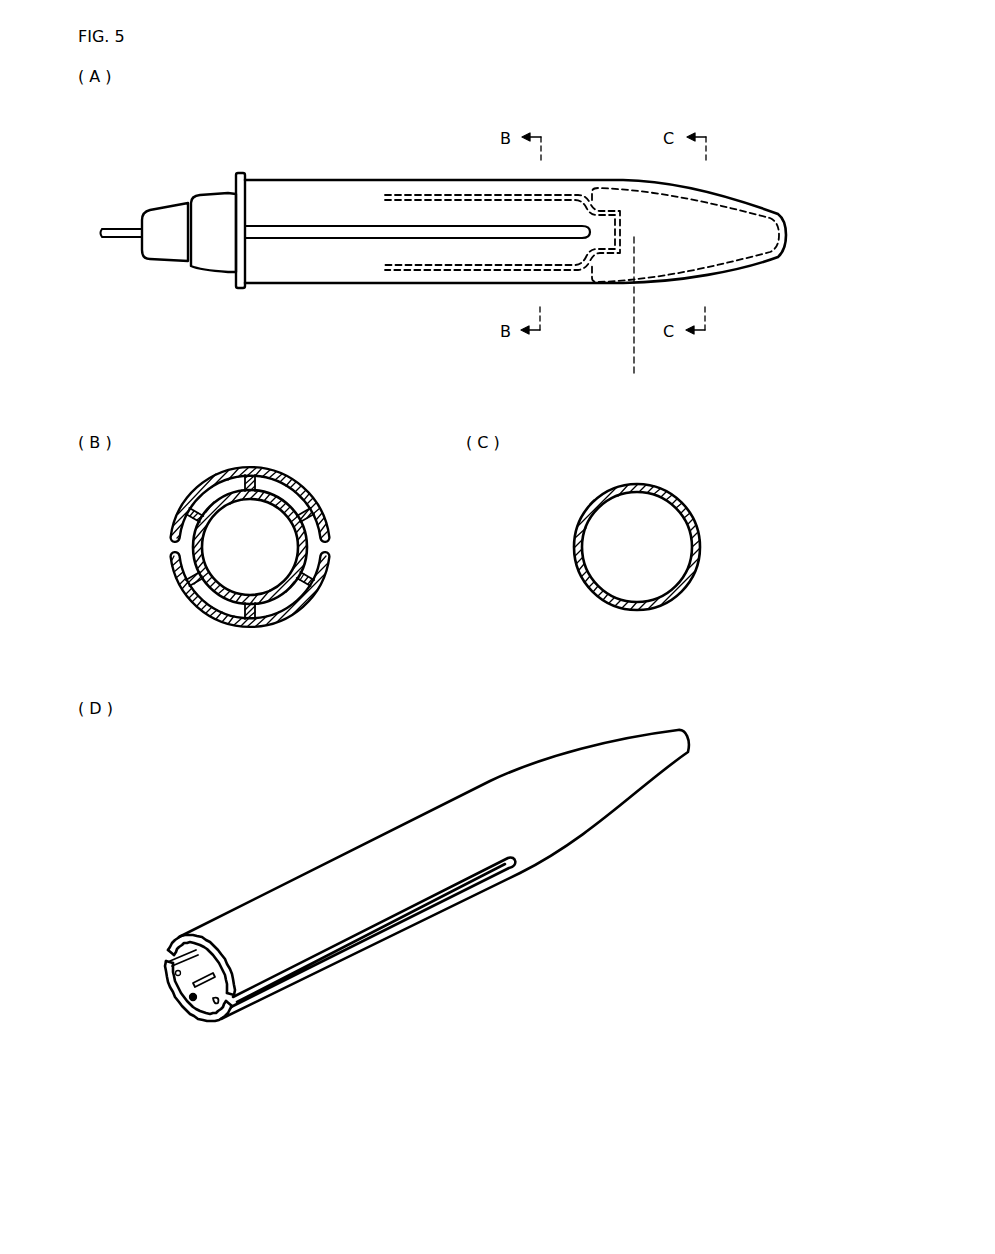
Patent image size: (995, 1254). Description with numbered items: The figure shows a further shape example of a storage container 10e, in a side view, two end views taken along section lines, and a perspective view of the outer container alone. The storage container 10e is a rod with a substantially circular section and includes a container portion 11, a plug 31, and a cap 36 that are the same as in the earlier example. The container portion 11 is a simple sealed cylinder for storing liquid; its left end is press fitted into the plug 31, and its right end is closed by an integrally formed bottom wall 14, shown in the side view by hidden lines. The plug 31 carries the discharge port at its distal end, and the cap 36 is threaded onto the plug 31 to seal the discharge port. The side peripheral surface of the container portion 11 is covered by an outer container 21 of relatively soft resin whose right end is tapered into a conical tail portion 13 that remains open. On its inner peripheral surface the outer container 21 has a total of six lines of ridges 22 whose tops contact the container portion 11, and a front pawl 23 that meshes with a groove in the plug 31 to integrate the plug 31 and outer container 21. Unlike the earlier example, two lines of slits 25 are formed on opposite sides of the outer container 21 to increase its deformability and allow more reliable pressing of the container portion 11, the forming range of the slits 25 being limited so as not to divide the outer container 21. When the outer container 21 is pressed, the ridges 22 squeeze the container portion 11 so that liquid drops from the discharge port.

The storage container 10e is at (296, 143).
The container portion 11 is at (174, 618).
The tail portion 13 is at (743, 270).
The bottom wall 14 is at (623, 318).
The outer container 21 is at (353, 293).
The ridge 22 is at (303, 490).
The front pawl 23 is at (190, 1012).
The slit 25 is at (172, 545).
The plug 31 is at (218, 248).
The cap 36 is at (162, 242).